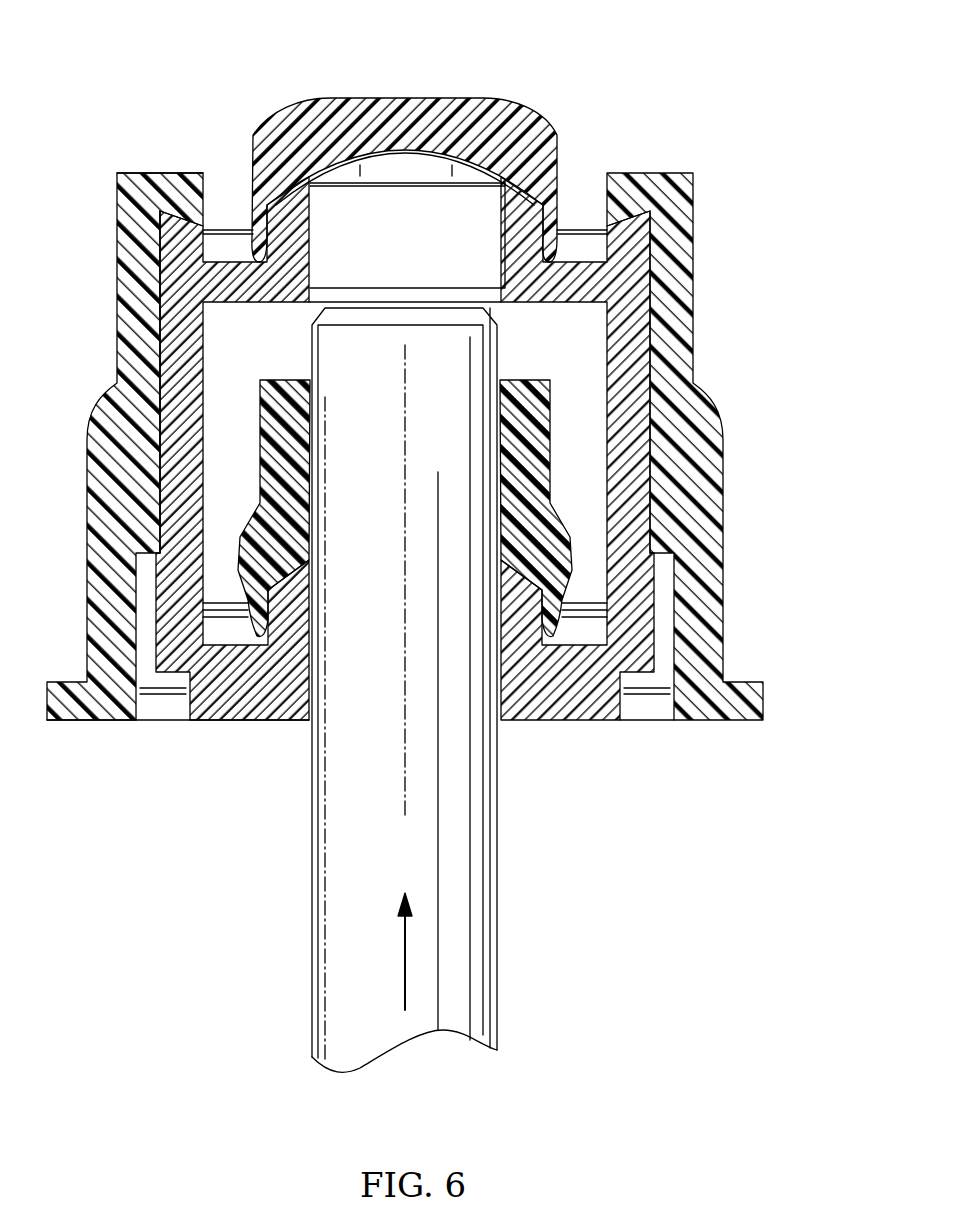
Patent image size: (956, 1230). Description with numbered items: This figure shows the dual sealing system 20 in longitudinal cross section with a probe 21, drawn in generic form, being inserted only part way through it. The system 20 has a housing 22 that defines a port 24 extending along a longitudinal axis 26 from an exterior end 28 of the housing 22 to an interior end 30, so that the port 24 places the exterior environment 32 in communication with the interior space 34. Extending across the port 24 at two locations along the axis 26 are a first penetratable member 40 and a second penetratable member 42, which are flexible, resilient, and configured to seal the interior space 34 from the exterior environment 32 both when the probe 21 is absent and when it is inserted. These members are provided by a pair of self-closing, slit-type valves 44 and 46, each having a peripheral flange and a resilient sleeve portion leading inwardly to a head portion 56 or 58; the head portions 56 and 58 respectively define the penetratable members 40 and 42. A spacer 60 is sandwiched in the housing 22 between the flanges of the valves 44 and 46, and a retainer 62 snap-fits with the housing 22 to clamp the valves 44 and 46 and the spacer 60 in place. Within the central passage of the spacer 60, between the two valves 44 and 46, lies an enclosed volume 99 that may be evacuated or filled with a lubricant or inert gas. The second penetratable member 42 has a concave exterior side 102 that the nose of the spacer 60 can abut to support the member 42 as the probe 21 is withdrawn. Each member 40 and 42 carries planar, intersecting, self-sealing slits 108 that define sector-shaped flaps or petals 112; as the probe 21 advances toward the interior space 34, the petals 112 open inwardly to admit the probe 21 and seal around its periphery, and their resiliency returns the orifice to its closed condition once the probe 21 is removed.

The dual sealing system 20 is at (748, 110).
The probe 21 is at (508, 998).
The housing 22 is at (702, 360).
The port 24 is at (544, 748).
The longitudinal axis 26 is at (402, 630).
The exterior end 28 is at (105, 722).
The interior end 30 is at (170, 173).
The exterior environment 32 is at (200, 898).
The interior space 34 is at (328, 29).
The first penetratable member 40 is at (260, 387).
The second penetratable member 42 is at (500, 110).
The first slit-type valve 44 is at (572, 557).
The second slit-type valve 46 is at (572, 138).
The head portion 56 is at (237, 533).
The head portion 58 is at (268, 135).
The spacer 60 is at (152, 361).
The retainer 62 is at (212, 735).
The enclosed volume 99 is at (574, 352).
The exterior side 102 is at (313, 178).
The self-sealing slits 108 is at (404, 98).
The flaps or petals 112 is at (363, 103).